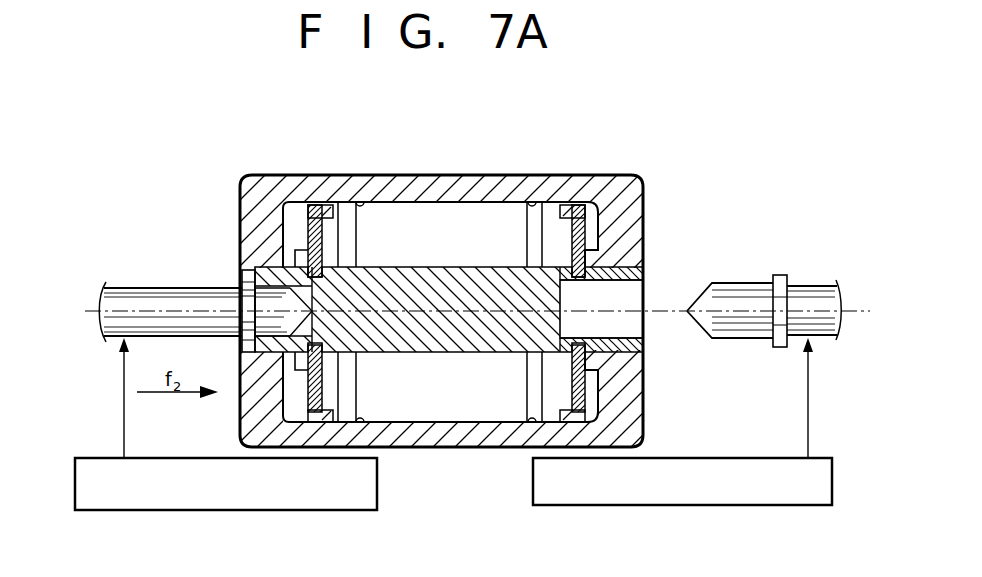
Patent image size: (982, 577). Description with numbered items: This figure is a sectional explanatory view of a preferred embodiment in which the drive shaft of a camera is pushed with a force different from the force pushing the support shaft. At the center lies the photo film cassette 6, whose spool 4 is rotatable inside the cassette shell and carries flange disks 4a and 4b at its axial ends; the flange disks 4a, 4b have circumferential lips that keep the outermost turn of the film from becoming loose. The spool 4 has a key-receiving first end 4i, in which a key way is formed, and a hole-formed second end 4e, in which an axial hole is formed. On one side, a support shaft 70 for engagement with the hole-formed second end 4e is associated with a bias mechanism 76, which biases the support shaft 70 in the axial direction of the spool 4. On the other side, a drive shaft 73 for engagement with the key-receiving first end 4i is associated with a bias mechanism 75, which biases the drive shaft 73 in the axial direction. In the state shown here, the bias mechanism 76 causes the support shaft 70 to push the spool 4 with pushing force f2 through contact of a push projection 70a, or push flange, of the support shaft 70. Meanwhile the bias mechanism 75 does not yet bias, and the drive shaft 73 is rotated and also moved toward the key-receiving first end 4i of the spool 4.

The spool 4 is at (404, 266).
The flange disk 4a is at (572, 205).
The flange disk 4b is at (318, 205).
The hole-formed second end 4e is at (307, 322).
The key-receiving first end 4i is at (645, 322).
The photo film cassette 6 is at (388, 175).
The support shaft 70 is at (128, 288).
The push projection 70a is at (243, 276).
The drive shaft 73 is at (746, 283).
The bias mechanism 75 is at (672, 505).
The bias mechanism 76 is at (233, 510).